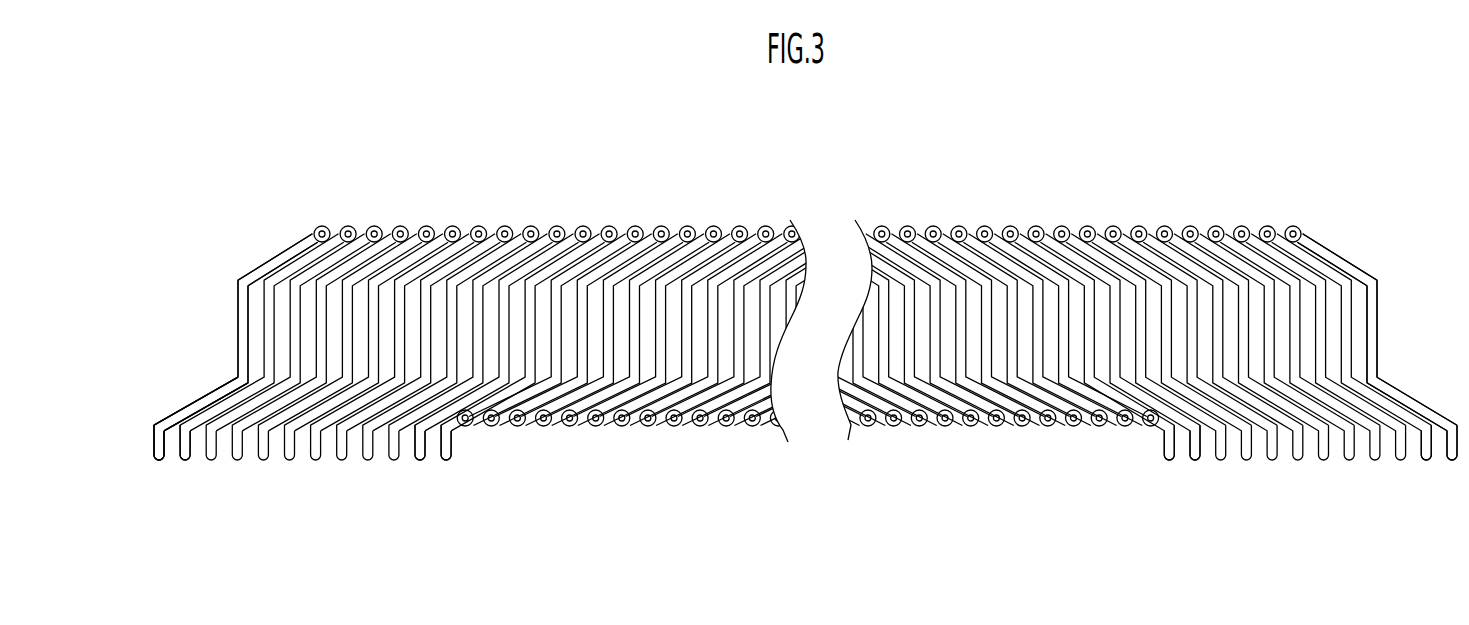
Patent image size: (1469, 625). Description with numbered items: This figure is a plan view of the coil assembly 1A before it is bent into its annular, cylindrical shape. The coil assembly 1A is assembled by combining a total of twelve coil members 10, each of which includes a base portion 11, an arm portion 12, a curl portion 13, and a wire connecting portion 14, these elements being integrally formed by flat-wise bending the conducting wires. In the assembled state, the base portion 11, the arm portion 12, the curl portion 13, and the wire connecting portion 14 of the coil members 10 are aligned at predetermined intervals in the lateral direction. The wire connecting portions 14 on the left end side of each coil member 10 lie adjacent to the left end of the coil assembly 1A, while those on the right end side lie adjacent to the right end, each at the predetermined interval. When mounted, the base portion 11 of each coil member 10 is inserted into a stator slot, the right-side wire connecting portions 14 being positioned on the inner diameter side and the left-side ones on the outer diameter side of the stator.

The coil assembly 1A is at (200, 347).
The coil member 10 is at (156, 428).
The base portion 11 is at (240, 326).
The arm portion 12 is at (268, 270).
The curl portion 13 is at (346, 228).
The wire connecting portion 14 is at (184, 460).